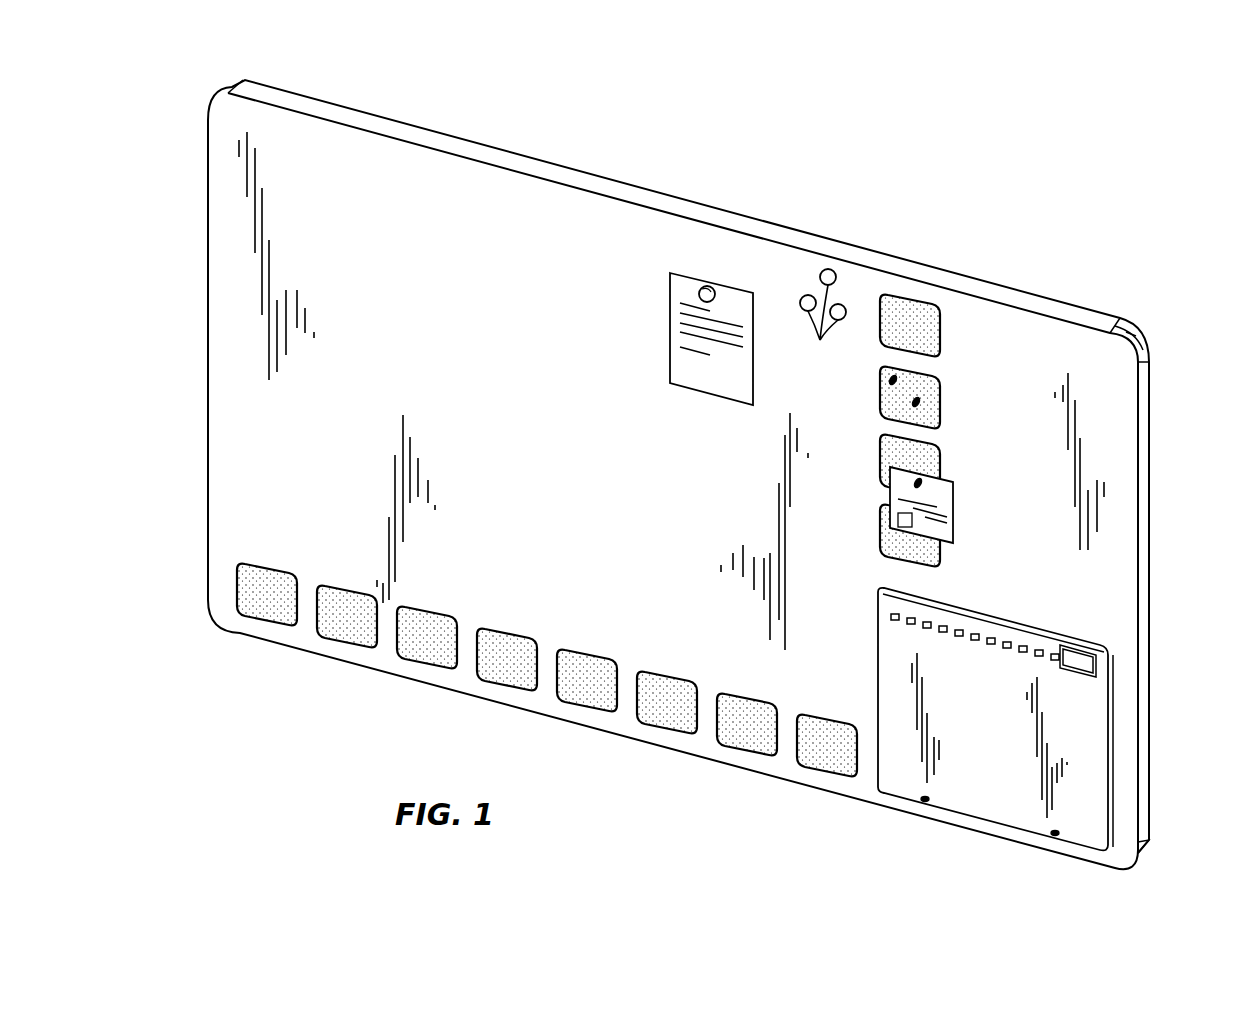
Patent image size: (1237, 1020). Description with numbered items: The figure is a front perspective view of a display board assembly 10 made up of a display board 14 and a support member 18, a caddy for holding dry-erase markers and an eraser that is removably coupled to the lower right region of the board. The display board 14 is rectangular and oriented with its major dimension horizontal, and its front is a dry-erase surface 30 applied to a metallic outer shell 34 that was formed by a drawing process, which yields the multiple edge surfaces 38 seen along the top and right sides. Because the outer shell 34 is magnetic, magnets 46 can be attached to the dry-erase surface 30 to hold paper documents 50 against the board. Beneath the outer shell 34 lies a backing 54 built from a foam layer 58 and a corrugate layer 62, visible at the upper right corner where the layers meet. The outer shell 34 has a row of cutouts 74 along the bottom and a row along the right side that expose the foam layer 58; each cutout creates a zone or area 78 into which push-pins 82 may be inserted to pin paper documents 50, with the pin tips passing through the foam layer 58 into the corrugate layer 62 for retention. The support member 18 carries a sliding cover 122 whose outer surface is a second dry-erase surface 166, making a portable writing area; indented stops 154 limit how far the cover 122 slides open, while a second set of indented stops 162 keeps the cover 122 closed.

The display board assembly 10 is at (800, 150).
The display board 14 is at (1162, 400).
The support member 18 is at (1112, 630).
The dry-erase surface 30 is at (462, 395).
The outer shell 34 is at (1122, 440).
The edge surfaces 38 is at (488, 152).
The magnets 46 is at (700, 292).
The paper documents 50 is at (708, 379).
The backing 54 is at (1138, 310).
The foam layer 58 is at (1143, 338).
The corrugate layer 62 is at (1142, 326).
The cutouts 74 is at (940, 322).
The zones or areas 78 is at (930, 346).
The push-pins 82 is at (893, 386).
The cover 122 is at (1108, 750).
The stops 154 is at (1003, 648).
The stops 162 is at (925, 802).
The dry-erase surface 166 is at (970, 763).